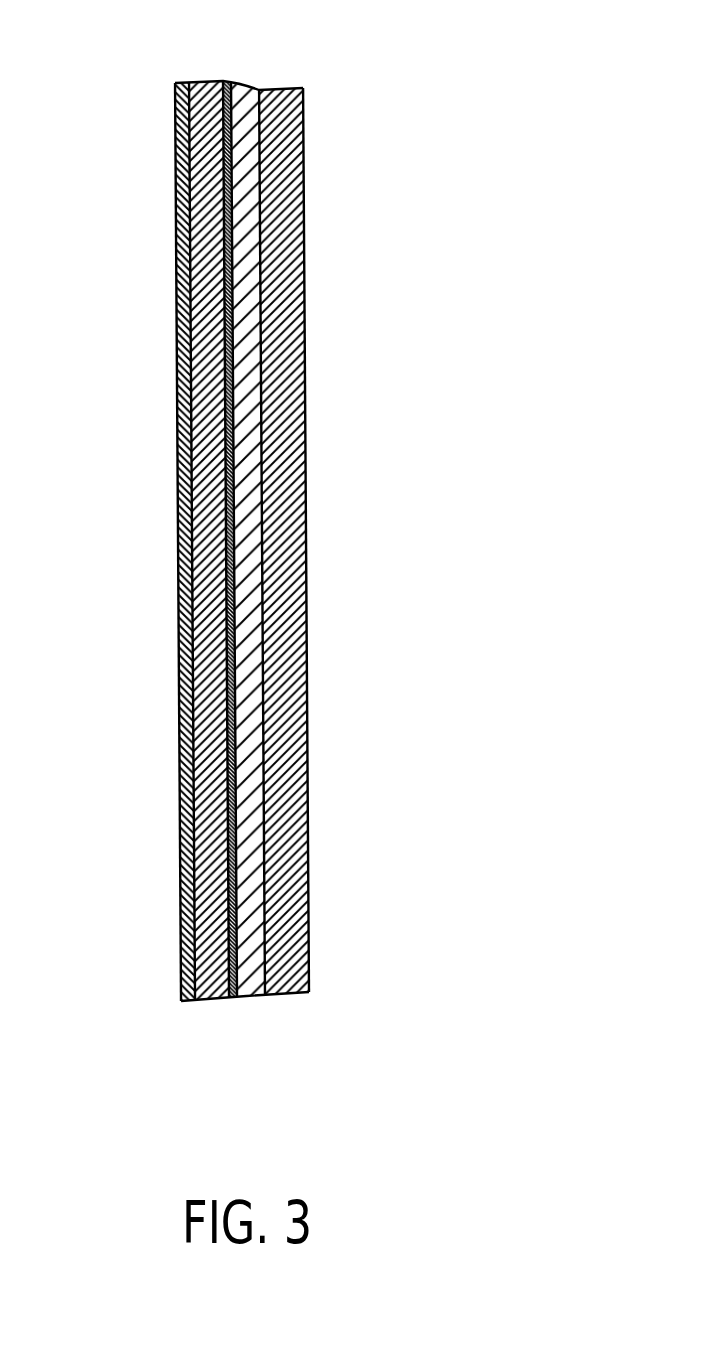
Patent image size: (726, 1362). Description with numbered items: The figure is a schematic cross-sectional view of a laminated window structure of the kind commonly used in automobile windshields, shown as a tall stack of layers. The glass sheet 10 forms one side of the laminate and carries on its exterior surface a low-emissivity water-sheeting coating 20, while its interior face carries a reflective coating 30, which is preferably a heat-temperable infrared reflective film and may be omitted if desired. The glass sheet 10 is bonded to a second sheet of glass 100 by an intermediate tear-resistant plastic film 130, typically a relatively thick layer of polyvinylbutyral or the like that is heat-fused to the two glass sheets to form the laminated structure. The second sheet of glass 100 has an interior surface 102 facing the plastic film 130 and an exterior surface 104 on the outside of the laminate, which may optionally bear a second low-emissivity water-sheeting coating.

The glass sheet 10 is at (215, 1000).
The low-emissivity water-sheeting coating 20 is at (175, 138).
The reflective coating 30 is at (228, 82).
The second sheet of glass 100 is at (290, 151).
The interior surface of the second glass pane 102 is at (257, 478).
The exterior surface of the second glass pane 104 is at (305, 376).
The intermediate tear-resistant plastic film 130 is at (248, 231).